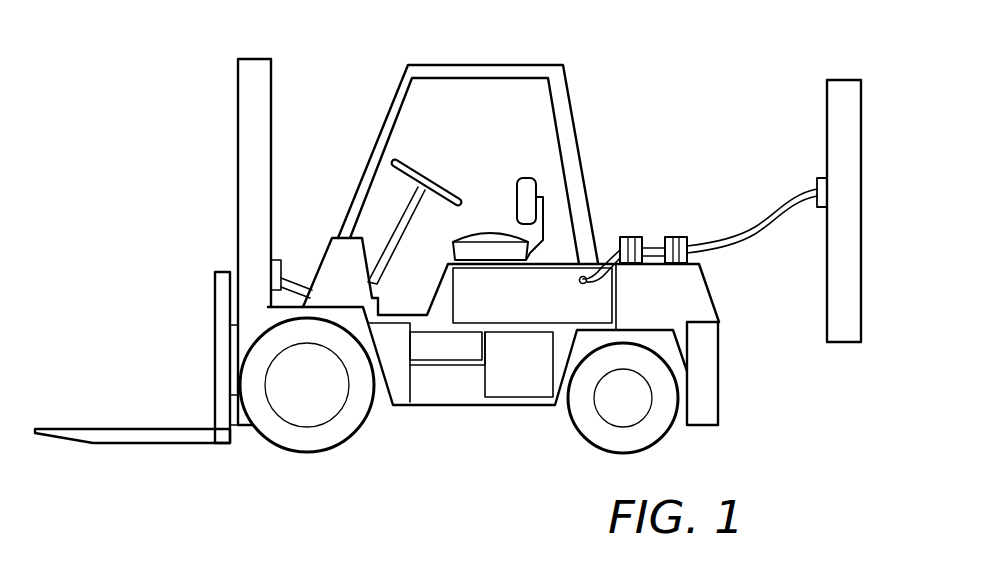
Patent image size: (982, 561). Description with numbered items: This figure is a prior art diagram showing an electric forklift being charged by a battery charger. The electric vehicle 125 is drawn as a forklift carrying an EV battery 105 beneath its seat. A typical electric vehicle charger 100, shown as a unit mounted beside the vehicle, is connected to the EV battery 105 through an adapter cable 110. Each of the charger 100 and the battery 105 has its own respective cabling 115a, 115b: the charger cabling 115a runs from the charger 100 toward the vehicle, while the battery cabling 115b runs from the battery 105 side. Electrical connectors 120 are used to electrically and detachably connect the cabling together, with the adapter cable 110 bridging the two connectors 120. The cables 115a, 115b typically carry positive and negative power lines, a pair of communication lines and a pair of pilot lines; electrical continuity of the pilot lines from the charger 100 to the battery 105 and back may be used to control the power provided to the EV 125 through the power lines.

The electric vehicle charger 100 is at (827, 105).
The EV battery 105 is at (546, 303).
The adapter cable 110 is at (655, 257).
The charger cabling 115a is at (795, 192).
The battery cabling 115b is at (591, 284).
The electrical connectors 120 is at (671, 237).
The electric vehicle 125 is at (537, 66).